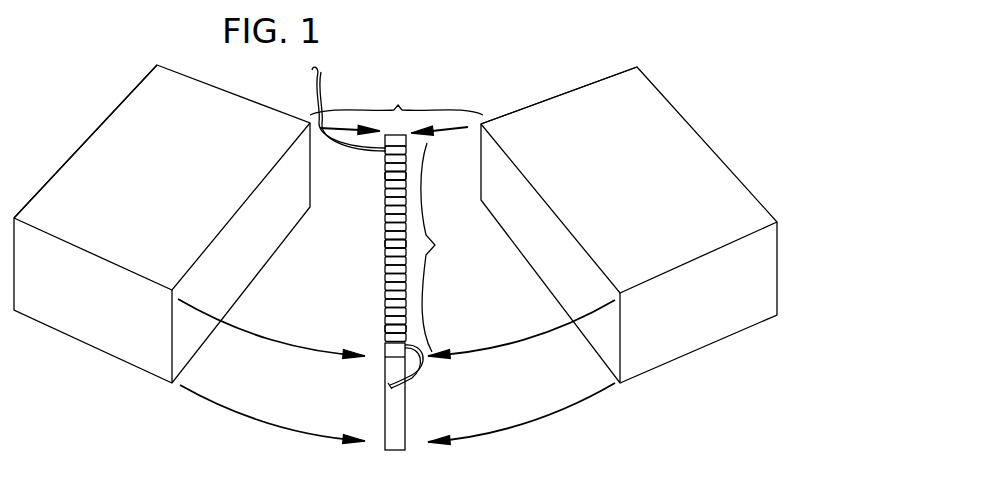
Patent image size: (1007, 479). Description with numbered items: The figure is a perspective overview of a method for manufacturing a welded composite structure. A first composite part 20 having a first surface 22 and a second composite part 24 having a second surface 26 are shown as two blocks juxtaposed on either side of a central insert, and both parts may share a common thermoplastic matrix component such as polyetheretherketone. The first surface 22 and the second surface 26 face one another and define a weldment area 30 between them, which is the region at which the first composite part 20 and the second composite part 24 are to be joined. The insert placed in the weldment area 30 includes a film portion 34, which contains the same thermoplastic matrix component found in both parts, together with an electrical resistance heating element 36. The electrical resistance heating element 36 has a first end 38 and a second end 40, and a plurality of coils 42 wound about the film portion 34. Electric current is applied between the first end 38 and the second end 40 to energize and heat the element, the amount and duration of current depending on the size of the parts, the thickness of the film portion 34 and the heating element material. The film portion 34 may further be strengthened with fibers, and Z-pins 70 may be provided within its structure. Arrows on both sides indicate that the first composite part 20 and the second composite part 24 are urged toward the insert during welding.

The first composite part 20 is at (157, 166).
The first surface 22 is at (222, 295).
The second composite part 24 is at (602, 171).
The second surface 26 is at (548, 262).
The weldment area 30 is at (396, 110).
The film portion 34 is at (349, 292).
The electrical resistance heating element 36 is at (385, 245).
The first end 38 is at (330, 80).
The second end 40 is at (413, 380).
The coils 42 is at (383, 171).
The Z-pins 70 is at (390, 420).